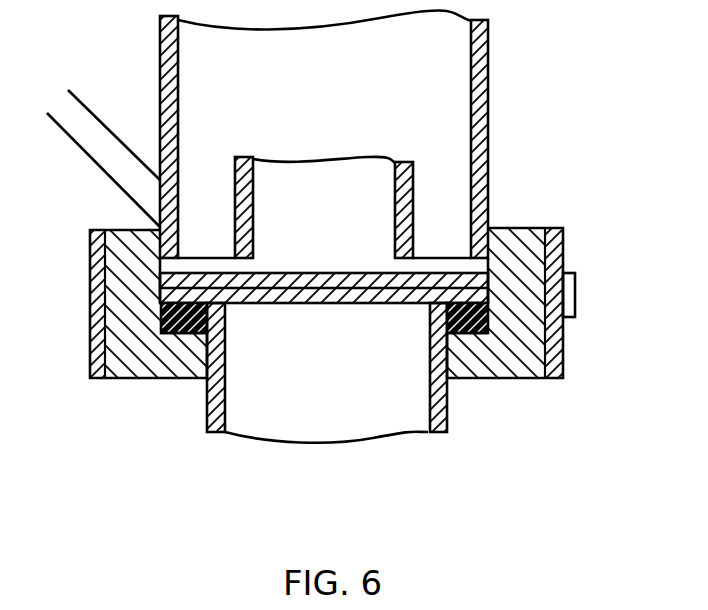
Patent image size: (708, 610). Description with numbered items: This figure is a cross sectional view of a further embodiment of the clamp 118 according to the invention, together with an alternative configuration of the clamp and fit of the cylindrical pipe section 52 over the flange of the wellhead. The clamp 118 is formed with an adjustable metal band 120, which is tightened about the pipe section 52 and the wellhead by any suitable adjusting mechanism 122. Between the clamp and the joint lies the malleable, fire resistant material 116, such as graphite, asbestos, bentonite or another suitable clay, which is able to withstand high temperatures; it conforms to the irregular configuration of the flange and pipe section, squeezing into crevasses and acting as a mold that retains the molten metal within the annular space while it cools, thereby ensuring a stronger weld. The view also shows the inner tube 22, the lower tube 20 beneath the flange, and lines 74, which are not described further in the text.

The cylindrical pipe section 52 is at (477, 70).
The inner tube 22 is at (367, 207).
The support lines 74 is at (110, 158).
The clamp 118 is at (515, 240).
The adjusting mechanism 122 is at (572, 295).
The adjustable metal band 120 is at (563, 335).
The malleable fire resistant material 116 is at (468, 323).
The lower tube 20 is at (435, 408).